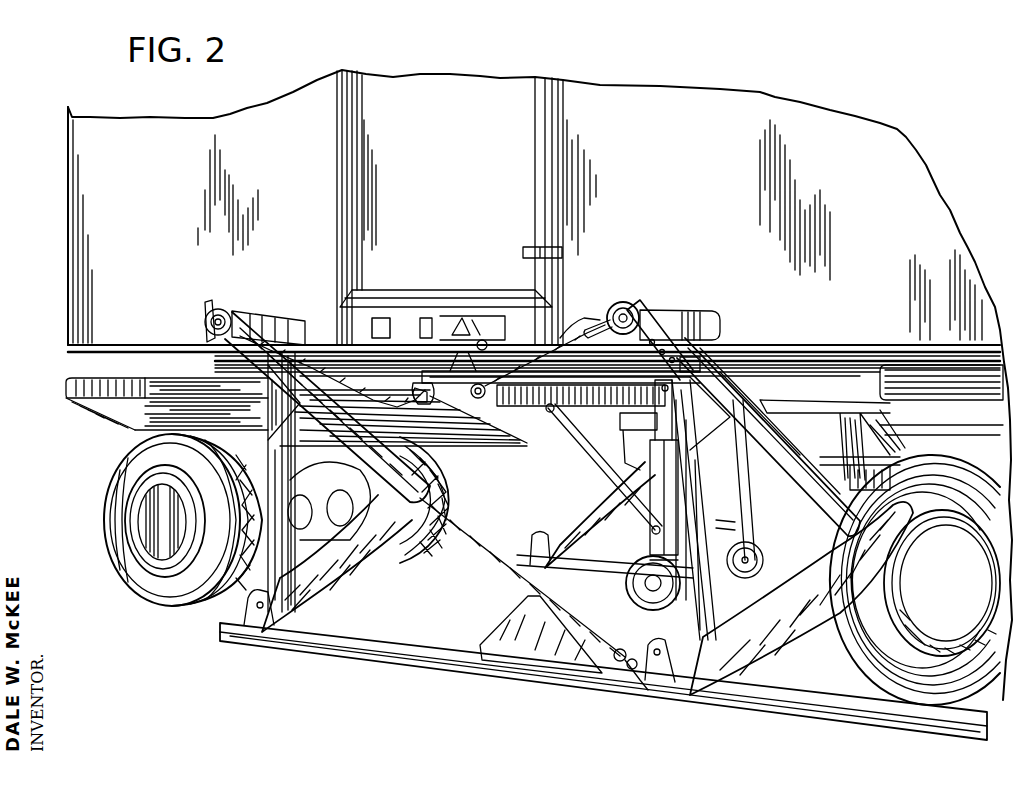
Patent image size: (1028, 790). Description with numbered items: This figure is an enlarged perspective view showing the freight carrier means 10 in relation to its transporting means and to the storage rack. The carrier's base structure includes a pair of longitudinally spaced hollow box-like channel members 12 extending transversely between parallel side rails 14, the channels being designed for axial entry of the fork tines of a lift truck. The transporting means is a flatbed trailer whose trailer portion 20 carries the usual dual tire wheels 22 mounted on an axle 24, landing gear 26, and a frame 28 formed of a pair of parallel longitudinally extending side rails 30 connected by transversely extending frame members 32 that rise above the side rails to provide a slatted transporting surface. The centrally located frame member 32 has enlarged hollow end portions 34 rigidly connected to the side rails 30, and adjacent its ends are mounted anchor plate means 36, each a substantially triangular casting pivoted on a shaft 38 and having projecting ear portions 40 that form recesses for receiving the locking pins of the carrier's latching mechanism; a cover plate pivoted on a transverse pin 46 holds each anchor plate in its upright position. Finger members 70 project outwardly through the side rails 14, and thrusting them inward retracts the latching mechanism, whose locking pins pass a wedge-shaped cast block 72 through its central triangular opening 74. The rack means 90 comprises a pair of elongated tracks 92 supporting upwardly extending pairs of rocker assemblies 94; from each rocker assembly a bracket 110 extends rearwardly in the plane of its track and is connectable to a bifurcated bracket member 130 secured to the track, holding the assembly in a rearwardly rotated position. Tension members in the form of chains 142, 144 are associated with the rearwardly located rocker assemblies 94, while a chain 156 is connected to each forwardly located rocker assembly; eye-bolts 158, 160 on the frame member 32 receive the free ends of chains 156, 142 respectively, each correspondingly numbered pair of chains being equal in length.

The freight carrier means 10 is at (900, 126).
The hollow box-like channel members 12 is at (300, 336).
The side rails 14 is at (584, 328).
The trailer portion 20 is at (118, 440).
The dual tire wheels 22 is at (140, 582).
The axle 24 is at (330, 489).
The landing gear 26 is at (640, 540).
The frame 28 is at (68, 396).
The side rails 30 is at (140, 418).
The frame members 32 is at (66, 383).
The enlarged hollow end portions 34 is at (520, 432).
The anchor plate means 36 is at (462, 318).
The shaft 38 is at (488, 340).
The projecting ear portions 40 is at (440, 360).
The transverse pin 46 is at (552, 386).
The finger members 70 is at (384, 318).
The wedge-shaped cast block 72 is at (432, 318).
The central triangular opening 74 is at (560, 334).
The rack means 90 is at (365, 655).
The elongated tracks 92 is at (458, 666).
The rocker assemblies 94 is at (790, 436).
The bracket 110 is at (665, 632).
The bifurcated bracket member 130 is at (645, 678).
The chain 142 is at (262, 318).
The chain 144 is at (488, 555).
The chain 156 is at (616, 318).
The eye-bolt 158 is at (481, 400).
The eye-bolt 160 is at (423, 404).